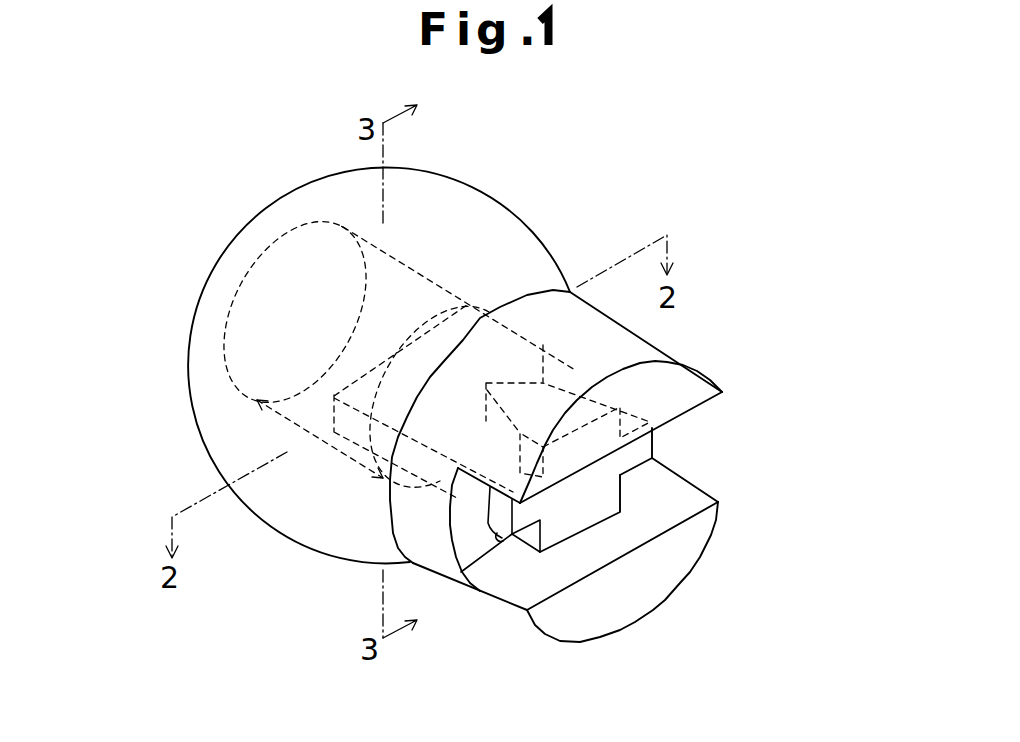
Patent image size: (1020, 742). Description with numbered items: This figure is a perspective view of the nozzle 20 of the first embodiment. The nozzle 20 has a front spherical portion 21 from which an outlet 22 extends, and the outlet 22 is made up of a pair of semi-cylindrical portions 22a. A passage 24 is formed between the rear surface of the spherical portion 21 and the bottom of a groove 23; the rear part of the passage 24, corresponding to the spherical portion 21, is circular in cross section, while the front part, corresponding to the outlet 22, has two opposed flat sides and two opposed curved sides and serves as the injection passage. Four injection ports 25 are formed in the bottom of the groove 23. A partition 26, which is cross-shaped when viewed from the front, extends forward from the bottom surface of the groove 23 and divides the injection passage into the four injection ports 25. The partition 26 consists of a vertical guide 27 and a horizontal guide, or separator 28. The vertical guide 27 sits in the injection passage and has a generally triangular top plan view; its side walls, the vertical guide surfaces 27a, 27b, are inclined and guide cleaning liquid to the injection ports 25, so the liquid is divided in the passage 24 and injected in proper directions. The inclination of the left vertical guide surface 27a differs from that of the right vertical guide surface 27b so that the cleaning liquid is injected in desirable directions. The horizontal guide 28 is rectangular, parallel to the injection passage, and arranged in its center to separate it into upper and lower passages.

The nozzle 20 is at (592, 201).
The spherical portion 21 is at (457, 200).
The outlet 22 is at (622, 335).
The semi-cylindrical portions 22a is at (687, 377).
The groove 23 is at (470, 528).
The passage 24 is at (314, 420).
The injection ports 25 is at (500, 537).
The partition 26 is at (680, 482).
The vertical guide 27 is at (607, 503).
The left vertical guide surface 27a is at (477, 371).
The right vertical guide surface 27b is at (490, 421).
The horizontal guide (separator) 28 is at (645, 448).